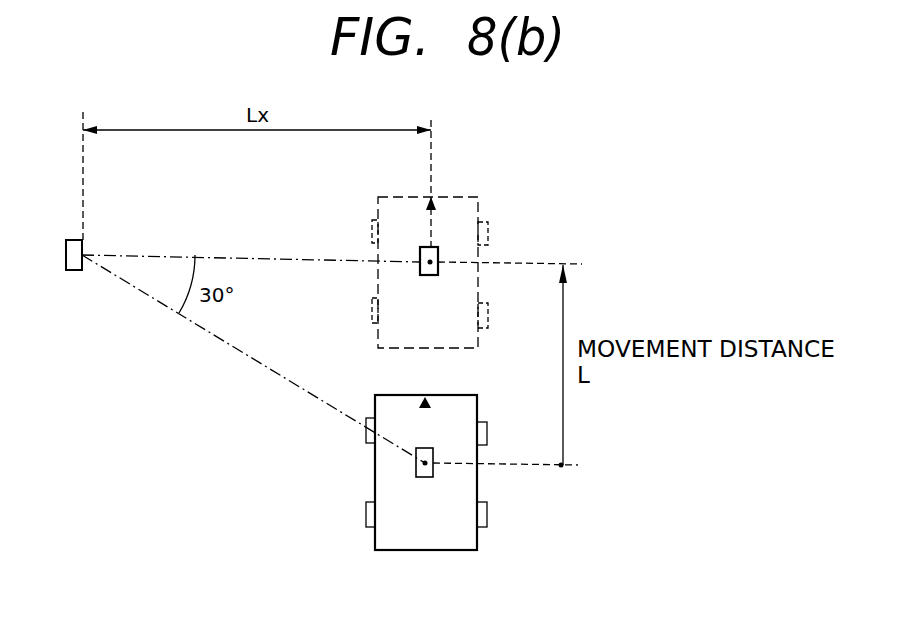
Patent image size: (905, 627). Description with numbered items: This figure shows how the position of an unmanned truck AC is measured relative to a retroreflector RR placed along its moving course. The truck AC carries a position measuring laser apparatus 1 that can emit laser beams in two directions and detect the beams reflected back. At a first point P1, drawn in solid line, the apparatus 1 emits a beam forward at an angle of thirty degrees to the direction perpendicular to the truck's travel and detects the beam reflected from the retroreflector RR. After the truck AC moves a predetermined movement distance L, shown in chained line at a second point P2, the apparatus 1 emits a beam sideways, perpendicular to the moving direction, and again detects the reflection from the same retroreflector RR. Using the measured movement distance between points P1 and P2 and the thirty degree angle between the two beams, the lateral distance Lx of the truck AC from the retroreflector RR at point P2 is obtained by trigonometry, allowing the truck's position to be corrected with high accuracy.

The position measuring laser apparatus 1 is at (420, 266).
The unmanned truck AC is at (453, 208).
The point P1 is at (428, 466).
The point P2 is at (432, 260).
The retroreflector RR is at (68, 272).